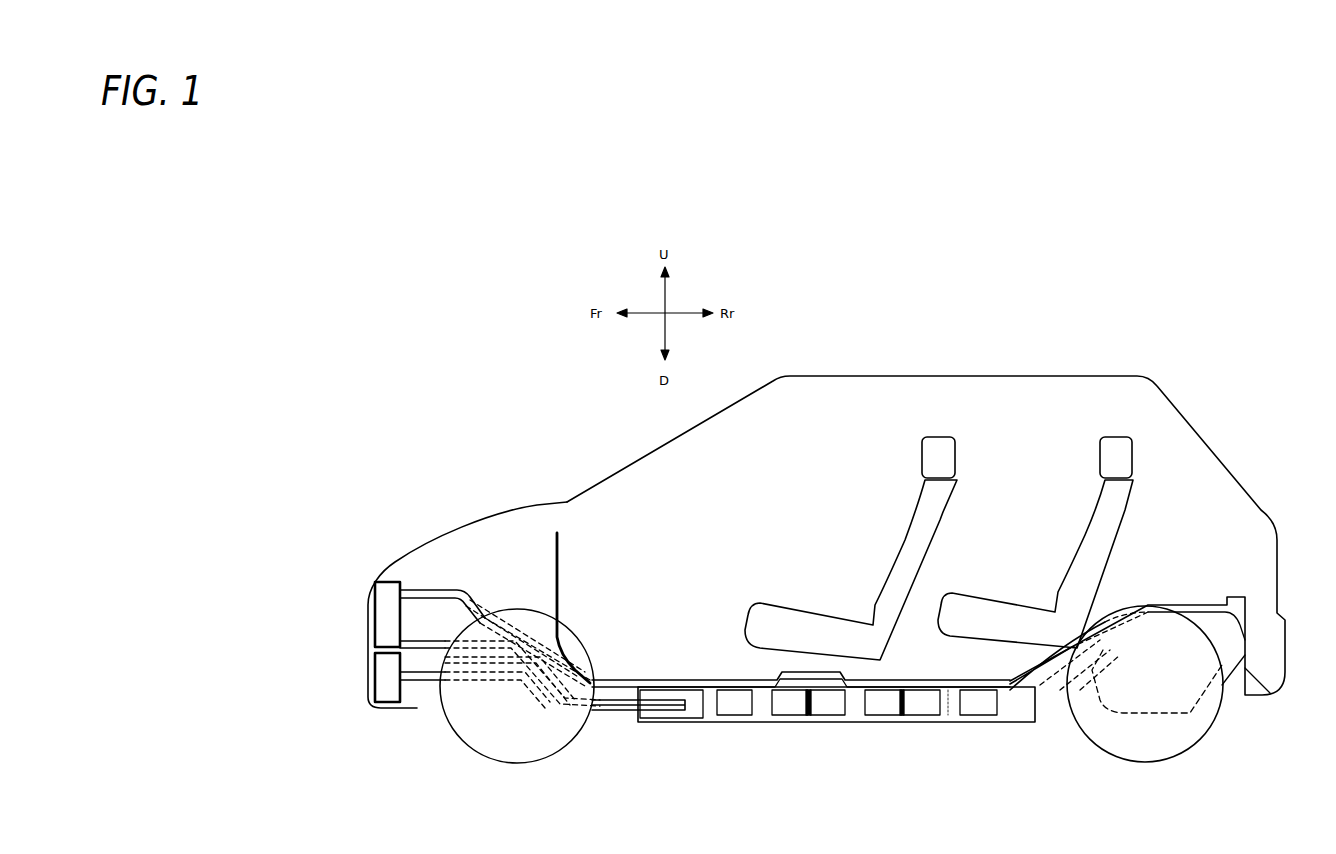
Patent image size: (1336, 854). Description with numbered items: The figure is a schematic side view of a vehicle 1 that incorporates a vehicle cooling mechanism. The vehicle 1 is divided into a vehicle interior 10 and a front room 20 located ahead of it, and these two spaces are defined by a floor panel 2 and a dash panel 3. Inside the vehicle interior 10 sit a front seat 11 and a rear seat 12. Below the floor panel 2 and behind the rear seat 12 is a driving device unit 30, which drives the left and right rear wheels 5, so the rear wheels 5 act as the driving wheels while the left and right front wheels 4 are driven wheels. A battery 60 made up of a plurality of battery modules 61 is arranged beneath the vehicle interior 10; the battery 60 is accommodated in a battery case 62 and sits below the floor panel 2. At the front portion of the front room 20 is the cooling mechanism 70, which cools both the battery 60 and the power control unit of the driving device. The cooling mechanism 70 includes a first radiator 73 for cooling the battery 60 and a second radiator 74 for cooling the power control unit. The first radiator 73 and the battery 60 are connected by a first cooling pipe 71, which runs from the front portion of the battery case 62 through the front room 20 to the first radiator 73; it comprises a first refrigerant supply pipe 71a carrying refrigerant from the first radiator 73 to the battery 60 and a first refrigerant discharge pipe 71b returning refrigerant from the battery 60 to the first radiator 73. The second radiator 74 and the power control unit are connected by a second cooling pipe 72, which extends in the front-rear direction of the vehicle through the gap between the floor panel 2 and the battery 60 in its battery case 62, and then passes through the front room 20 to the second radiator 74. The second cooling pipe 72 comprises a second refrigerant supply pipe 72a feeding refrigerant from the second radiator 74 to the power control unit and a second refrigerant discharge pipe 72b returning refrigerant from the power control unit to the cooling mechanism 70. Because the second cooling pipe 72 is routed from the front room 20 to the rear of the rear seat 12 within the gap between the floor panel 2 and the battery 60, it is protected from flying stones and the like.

The vehicle 1 is at (556, 380).
The floor panel 2 is at (640, 680).
The dash panel 3 is at (558, 565).
The front wheels 4 is at (580, 732).
The rear wheels 5 is at (1213, 735).
The vehicle interior 10 is at (832, 464).
The front seat 11 is at (908, 540).
The rear seat 12 is at (1088, 535).
The front room 20 is at (524, 539).
The driving device unit 30 is at (1256, 690).
The battery 60 is at (790, 722).
The battery modules 61 is at (918, 705).
The battery case 62 is at (948, 722).
The cooling mechanism 70 is at (388, 582).
The first cooling pipe 71 is at (628, 716).
The first refrigerant supply pipe 71a is at (422, 640).
The first refrigerant discharge pipe 71b is at (455, 590).
The second cooling pipe 72 is at (1052, 700).
The second refrigerant supply pipe 72a is at (478, 690).
The second refrigerant discharge pipe 72b is at (465, 680).
The first radiator 73 is at (380, 608).
The second radiator 74 is at (380, 672).